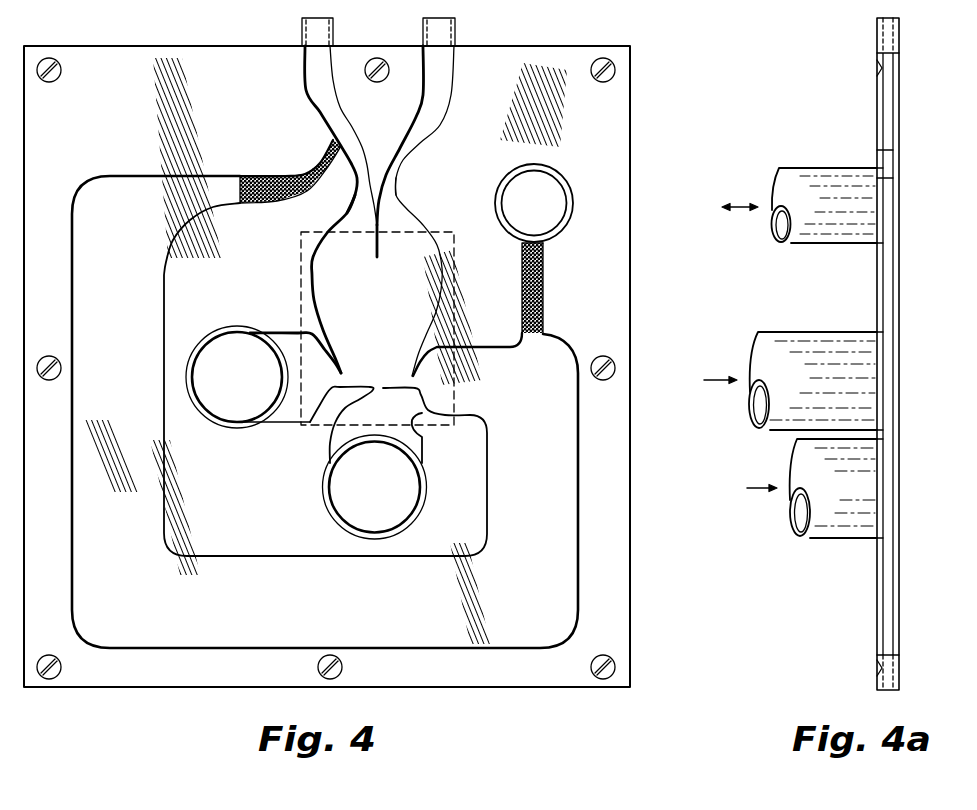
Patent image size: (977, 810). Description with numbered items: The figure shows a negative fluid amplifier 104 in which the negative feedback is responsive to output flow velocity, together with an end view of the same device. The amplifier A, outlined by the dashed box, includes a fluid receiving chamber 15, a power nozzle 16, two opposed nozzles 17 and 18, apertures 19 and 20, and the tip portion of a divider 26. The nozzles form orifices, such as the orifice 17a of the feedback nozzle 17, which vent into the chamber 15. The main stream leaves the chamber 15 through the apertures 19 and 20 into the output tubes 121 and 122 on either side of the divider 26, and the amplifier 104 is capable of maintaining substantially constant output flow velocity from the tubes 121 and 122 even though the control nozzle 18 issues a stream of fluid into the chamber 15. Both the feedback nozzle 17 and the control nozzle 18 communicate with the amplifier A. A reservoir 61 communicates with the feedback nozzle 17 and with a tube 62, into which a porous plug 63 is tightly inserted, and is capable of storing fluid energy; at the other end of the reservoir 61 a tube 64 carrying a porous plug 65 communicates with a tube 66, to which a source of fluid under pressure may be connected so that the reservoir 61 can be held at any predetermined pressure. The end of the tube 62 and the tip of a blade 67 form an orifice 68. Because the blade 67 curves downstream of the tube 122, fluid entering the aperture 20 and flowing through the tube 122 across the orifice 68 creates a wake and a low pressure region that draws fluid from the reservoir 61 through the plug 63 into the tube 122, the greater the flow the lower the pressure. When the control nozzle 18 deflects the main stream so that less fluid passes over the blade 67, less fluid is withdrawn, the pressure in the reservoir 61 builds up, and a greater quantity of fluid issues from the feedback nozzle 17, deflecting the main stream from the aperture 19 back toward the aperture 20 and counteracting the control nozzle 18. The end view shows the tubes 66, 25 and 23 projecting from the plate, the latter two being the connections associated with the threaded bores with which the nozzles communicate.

In FIG. 4, the amplifier 104 is at (640, 205).
In FIG. 4A, the amplifier 104 is at (908, 263).
In FIG. 4, the reservoir 61 is at (537, 479).
In FIG. 4, the porous plug 63 is at (274, 188).
In FIG. 4, the tube 62 is at (259, 197).
In FIG. 4, the blade 67 is at (345, 208).
In FIG. 4, the orifice 68 is at (340, 134).
In FIG. 4, the tube 122 is at (366, 187).
In FIG. 4, the tube 121 is at (397, 163).
In FIG. 4, the divider 26 is at (377, 257).
In FIG. 4, the aperture 19 is at (413, 242).
In FIG. 4, the aperture 20 is at (347, 238).
In FIG. 4, the fluid receiving chamber 15 is at (382, 322).
In FIG. 4, the amplifier A is at (300, 258).
In FIG. 4, the orifice 17a is at (408, 374).
In FIG. 4, the feedback nozzle 17 is at (427, 397).
In FIG. 4, the power nozzle 16 is at (422, 443).
In FIG. 4, the control nozzle 18 is at (313, 407).
In FIG. 4, the outlet tube port 25 is at (232, 412).
In FIG. 4A, the outlet tube port 25 is at (812, 392).
In FIG. 4, the outlet tube port 23 is at (385, 527).
In FIG. 4A, the outlet tube port 23 is at (843, 495).
In FIG. 4, the tube 66 is at (553, 181).
In FIG. 4A, the tube 66 is at (828, 216).
In FIG. 4, the porous plug 65 is at (537, 272).
In FIG. 4, the tube 64 is at (541, 293).